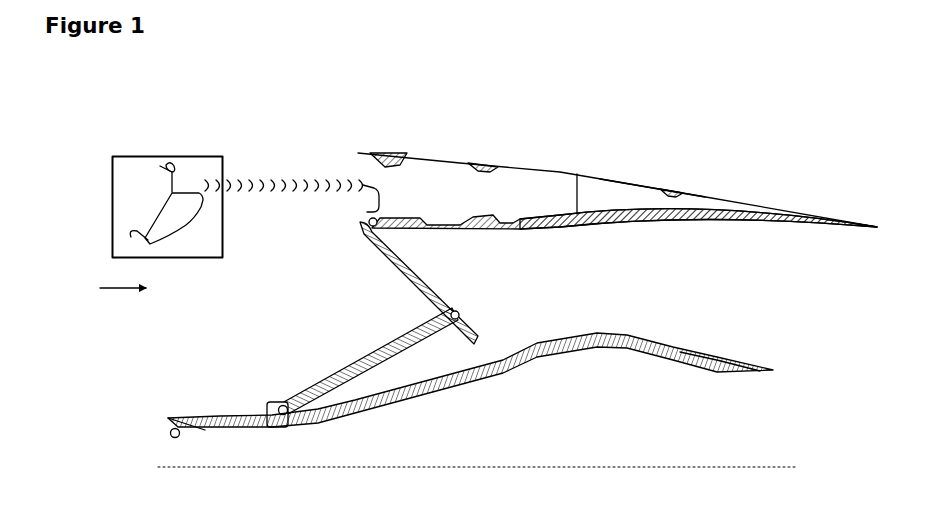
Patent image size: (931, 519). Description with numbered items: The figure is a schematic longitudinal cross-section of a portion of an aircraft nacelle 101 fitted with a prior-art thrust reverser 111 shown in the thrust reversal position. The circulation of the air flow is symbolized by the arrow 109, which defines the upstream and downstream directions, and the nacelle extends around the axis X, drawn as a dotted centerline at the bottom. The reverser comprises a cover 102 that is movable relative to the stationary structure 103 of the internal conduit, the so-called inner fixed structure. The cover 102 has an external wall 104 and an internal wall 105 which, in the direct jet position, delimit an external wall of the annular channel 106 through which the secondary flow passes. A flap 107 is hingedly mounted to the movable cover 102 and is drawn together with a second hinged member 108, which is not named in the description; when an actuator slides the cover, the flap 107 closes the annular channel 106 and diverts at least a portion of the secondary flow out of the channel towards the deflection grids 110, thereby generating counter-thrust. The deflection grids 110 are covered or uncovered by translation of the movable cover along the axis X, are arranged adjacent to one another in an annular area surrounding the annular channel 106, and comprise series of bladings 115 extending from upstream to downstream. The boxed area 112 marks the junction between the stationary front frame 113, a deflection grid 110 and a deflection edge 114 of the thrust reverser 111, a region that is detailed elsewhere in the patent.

The aircraft nacelle 101 is at (568, 80).
The movable cover 102 is at (626, 192).
The stationary structure (inner fixed structure) 103 is at (137, 163).
The external wall 104 is at (705, 194).
The internal wall 105 is at (692, 216).
The annular channel 106 is at (605, 287).
The flap 107 is at (405, 292).
The second strut 108 is at (345, 368).
The arrow 109 is at (121, 292).
The deflection grids 110 is at (254, 138).
The thrust reverser 111 is at (228, 100).
The junction area 112 is at (112, 186).
The front frame 113 is at (172, 218).
The deflection edge 114 is at (190, 222).
The bladings 115 is at (296, 165).
The axis X is at (752, 470).